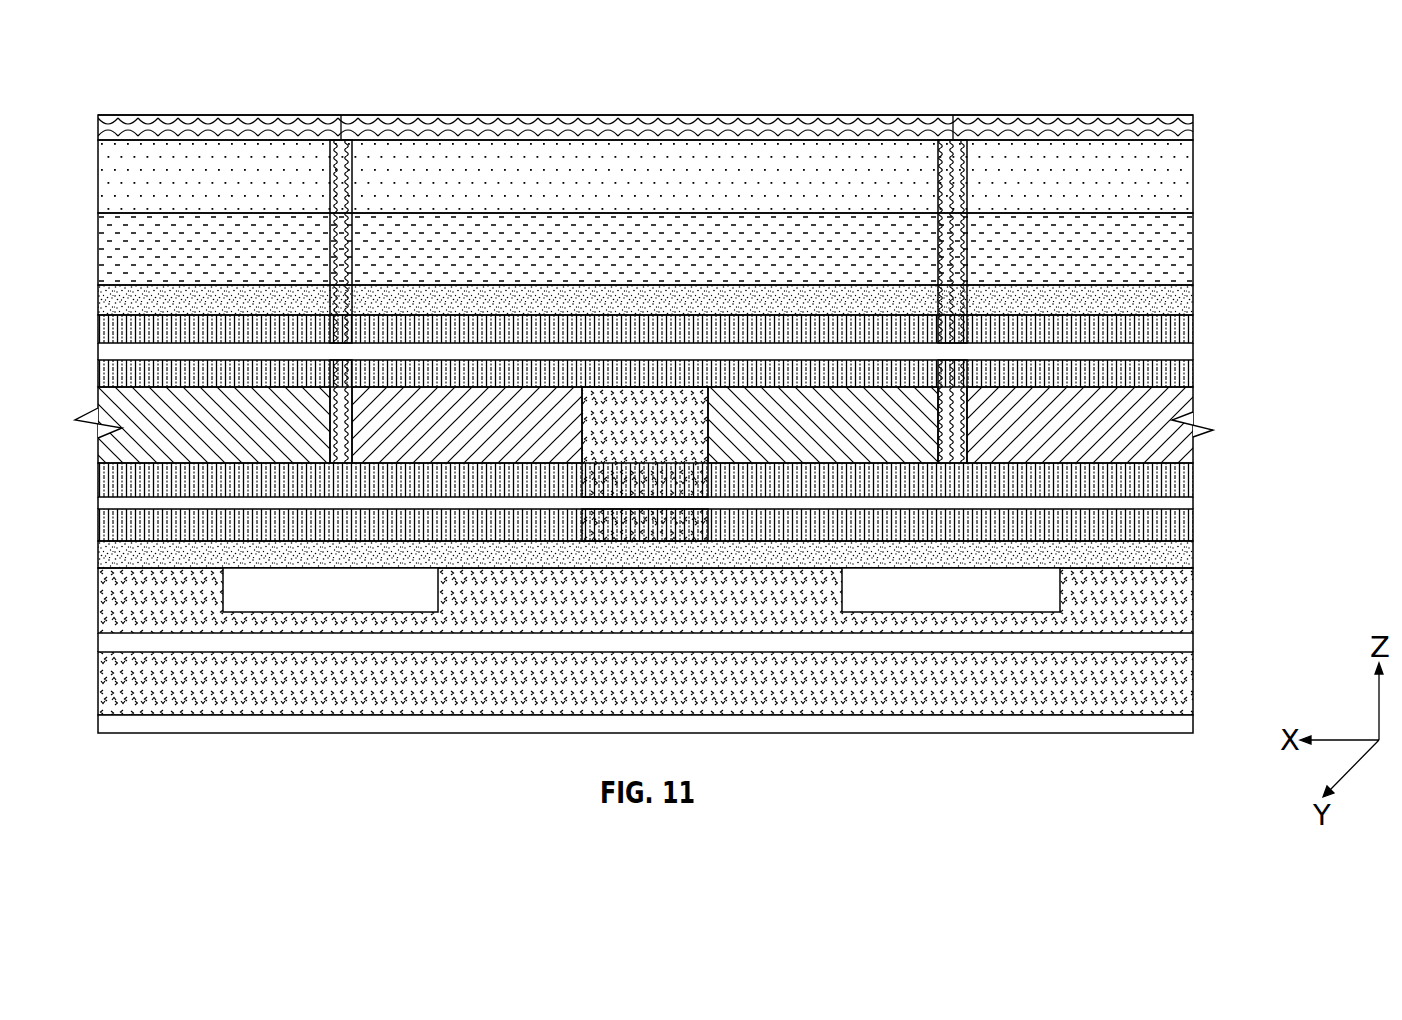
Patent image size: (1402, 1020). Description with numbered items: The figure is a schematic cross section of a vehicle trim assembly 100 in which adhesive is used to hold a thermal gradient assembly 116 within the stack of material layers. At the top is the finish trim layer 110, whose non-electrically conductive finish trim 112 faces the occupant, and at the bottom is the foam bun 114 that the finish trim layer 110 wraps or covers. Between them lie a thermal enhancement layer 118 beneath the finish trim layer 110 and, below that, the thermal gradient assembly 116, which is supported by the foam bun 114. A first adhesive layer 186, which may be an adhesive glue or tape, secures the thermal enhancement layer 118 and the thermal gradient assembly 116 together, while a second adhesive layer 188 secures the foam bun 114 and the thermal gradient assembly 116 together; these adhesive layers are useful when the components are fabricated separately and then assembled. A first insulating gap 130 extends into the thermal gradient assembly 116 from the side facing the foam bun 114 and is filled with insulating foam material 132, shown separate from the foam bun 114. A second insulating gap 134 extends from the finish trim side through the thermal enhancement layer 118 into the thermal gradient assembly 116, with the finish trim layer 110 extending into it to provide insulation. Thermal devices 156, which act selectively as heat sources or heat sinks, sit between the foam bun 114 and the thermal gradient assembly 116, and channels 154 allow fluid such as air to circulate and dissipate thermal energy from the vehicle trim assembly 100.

The vehicle trim assembly 100 is at (680, 426).
The finish trim layer 110 is at (1223, 115).
The finish trim 112 is at (1072, 115).
The foam bun 114 is at (1223, 570).
The thermal gradient assembly 116 is at (1223, 317).
The thermal enhancement layer 118 is at (1223, 287).
The first insulating gap 130 is at (617, 386).
The insulating foam material 132 is at (647, 402).
The second insulating gap 134 is at (329, 175).
The channels 154 is at (940, 733).
The thermal devices 156 is at (303, 595).
The first adhesive layer 186 is at (1189, 297).
The second adhesive layer 188 is at (1189, 552).